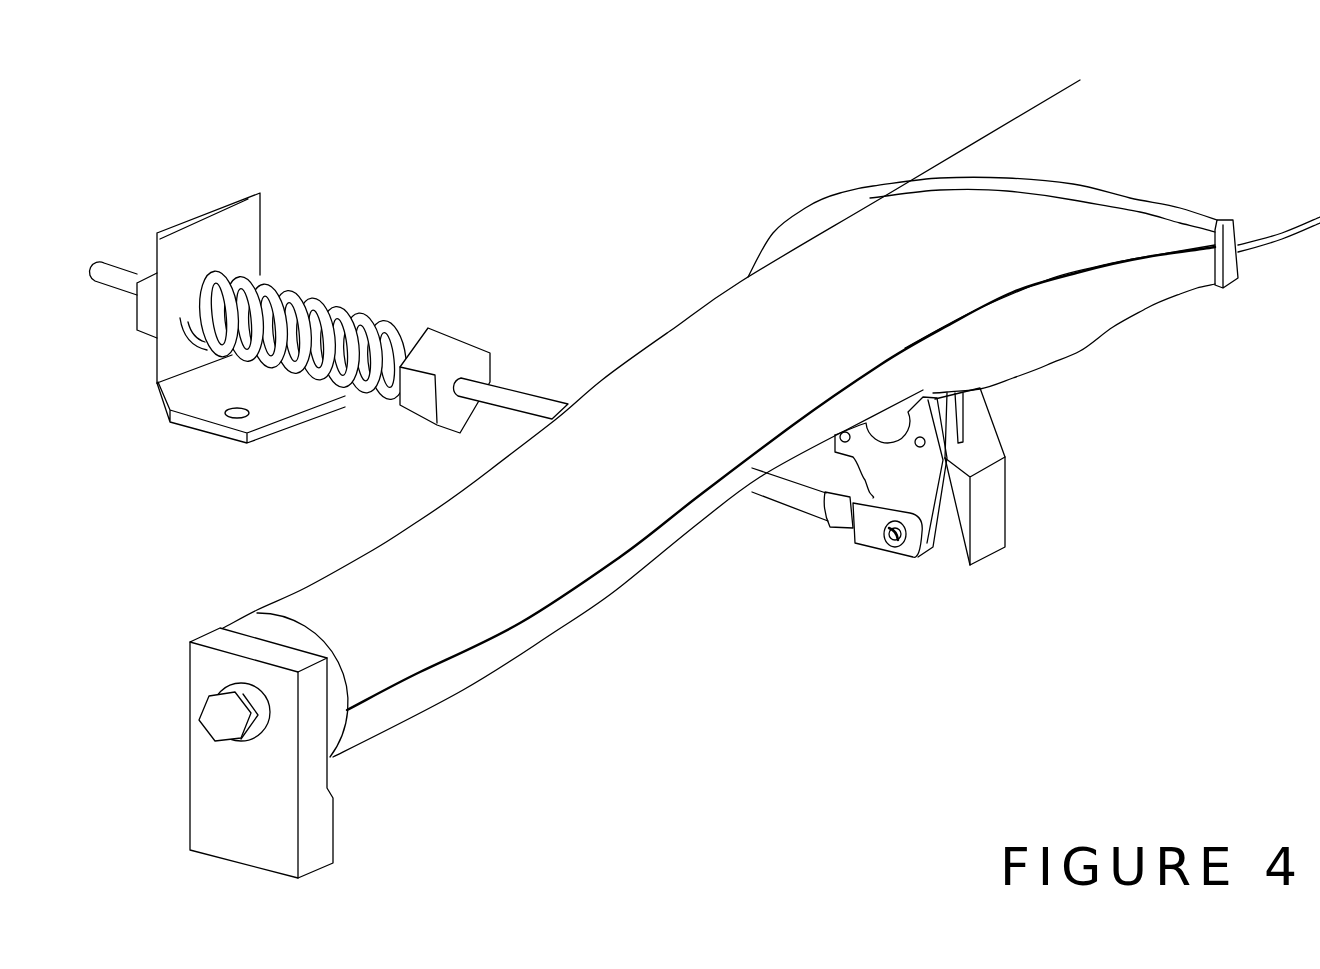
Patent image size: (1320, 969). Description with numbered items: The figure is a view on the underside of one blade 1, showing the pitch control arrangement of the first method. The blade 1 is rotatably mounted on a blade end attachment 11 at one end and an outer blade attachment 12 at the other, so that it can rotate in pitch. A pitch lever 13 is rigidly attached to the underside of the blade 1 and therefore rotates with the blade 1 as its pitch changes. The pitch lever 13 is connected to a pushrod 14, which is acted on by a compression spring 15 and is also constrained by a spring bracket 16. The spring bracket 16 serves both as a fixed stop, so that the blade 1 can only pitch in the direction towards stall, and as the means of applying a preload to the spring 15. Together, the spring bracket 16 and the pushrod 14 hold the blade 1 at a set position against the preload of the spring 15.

The blade 1 is at (548, 635).
The blade end attachment 11 is at (341, 821).
The outer blade attachment 12 is at (1026, 473).
The pitch lever 13 is at (925, 489).
The pushrod 14 is at (511, 371).
The spring 15 is at (312, 274).
The spring bracket 16 is at (236, 171).